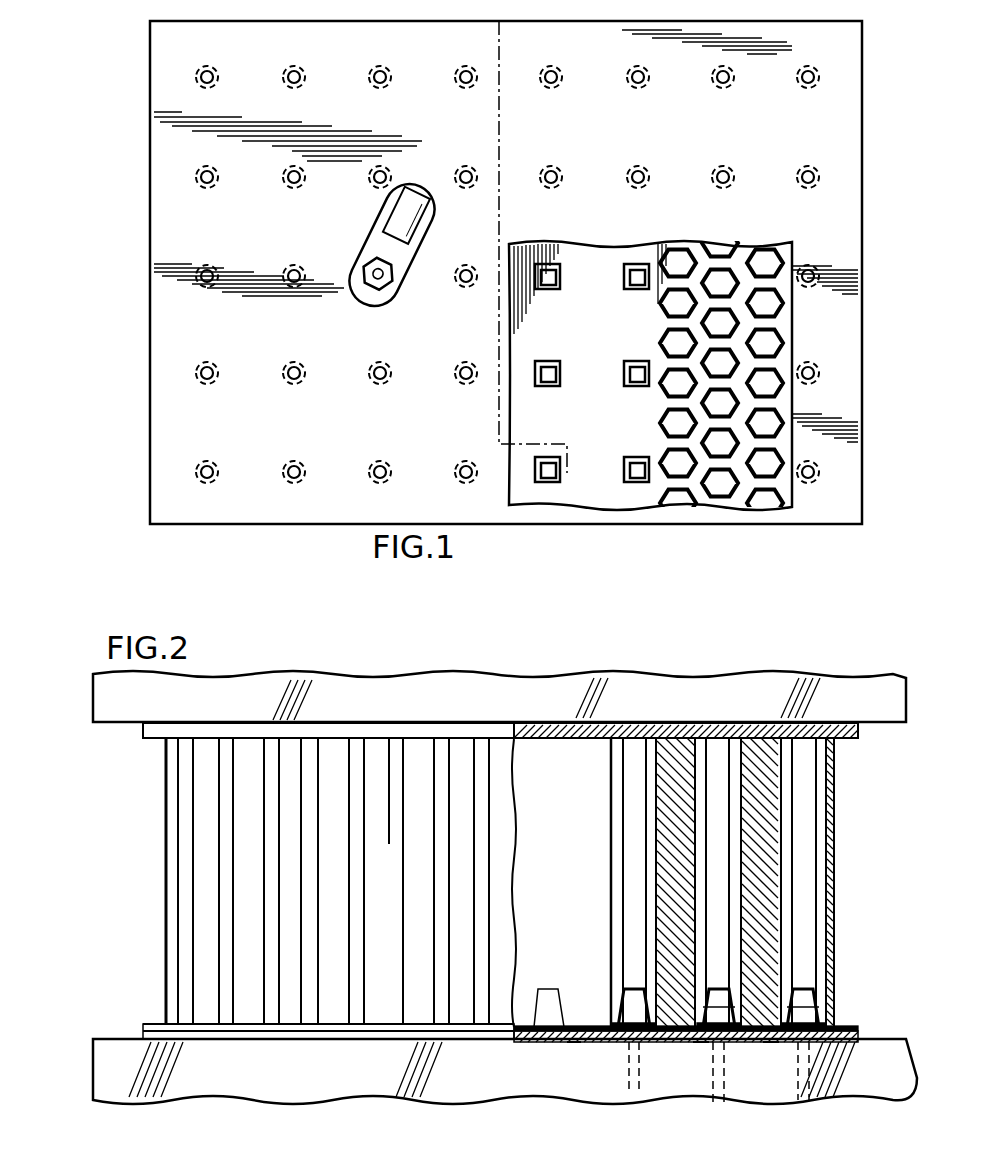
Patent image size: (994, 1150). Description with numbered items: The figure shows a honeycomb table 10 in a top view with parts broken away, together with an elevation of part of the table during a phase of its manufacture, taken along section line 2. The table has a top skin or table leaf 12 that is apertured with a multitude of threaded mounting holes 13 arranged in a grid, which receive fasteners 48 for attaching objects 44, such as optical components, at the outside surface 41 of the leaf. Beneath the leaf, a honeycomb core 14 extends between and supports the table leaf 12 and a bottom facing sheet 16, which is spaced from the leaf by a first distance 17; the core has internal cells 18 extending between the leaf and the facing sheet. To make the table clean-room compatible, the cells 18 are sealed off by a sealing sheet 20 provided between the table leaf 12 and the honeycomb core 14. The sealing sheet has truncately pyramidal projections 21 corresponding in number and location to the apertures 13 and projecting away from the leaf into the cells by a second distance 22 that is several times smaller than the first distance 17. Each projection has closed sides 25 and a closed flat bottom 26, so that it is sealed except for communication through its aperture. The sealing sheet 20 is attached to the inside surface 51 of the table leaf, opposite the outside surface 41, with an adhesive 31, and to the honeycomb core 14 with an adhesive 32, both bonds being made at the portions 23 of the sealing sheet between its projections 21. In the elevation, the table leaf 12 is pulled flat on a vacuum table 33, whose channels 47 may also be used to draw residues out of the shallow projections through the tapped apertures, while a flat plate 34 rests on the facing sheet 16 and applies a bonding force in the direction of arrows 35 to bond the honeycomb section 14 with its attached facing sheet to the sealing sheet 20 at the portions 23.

In FIG. 1, the section line 2 is at (497, 14).
In FIG. 1, the honeycomb table 10 is at (140, 302).
In FIG. 2, the honeycomb table 10 is at (152, 873).
In FIG. 1, the table leaf 12 is at (160, 218).
In FIG. 2, the table leaf 12 is at (308, 1032).
In FIG. 1, the mounting holes 13 is at (207, 458).
In FIG. 1, the honeycomb core 14 is at (778, 403).
In FIG. 2, the honeycomb core 14 is at (846, 868).
In FIG. 2, the facing sheet 16 is at (540, 722).
In FIG. 2, the first distance 17 is at (418, 1010).
In FIG. 1, the internal cells 18 is at (680, 495).
In FIG. 2, the internal cells 18 is at (717, 906).
In FIG. 1, the sealing sheet 20 is at (584, 450).
In FIG. 2, the sealing sheet 20 is at (142, 1022).
In FIG. 1, the projections 21 is at (626, 272).
In FIG. 2, the projections 21 is at (718, 984).
In FIG. 2, the second distance 22 is at (572, 1040).
In FIG. 2, the portions of the sealing sheet 23 is at (770, 1040).
In FIG. 2, the closed sides 25 is at (725, 1002).
In FIG. 2, the closed bottoms 26 is at (802, 990).
In FIG. 2, the adhesive 31 is at (719, 1045).
In FIG. 2, the adhesive 32 is at (700, 1040).
In FIG. 2, the vacuum table 33 is at (172, 1080).
In FIG. 2, the flat plate 34 is at (712, 680).
In FIG. 2, the arrows 35 is at (95, 752).
In FIG. 1, the outside surface 41 is at (463, 228).
In FIG. 2, the outside surface 41 is at (525, 1045).
In FIG. 1, the objects 44 is at (383, 213).
In FIG. 2, the channels 47 is at (625, 1065).
In FIG. 1, the fasteners 48 is at (398, 284).
In FIG. 2, the inside surface 51 is at (857, 1029).